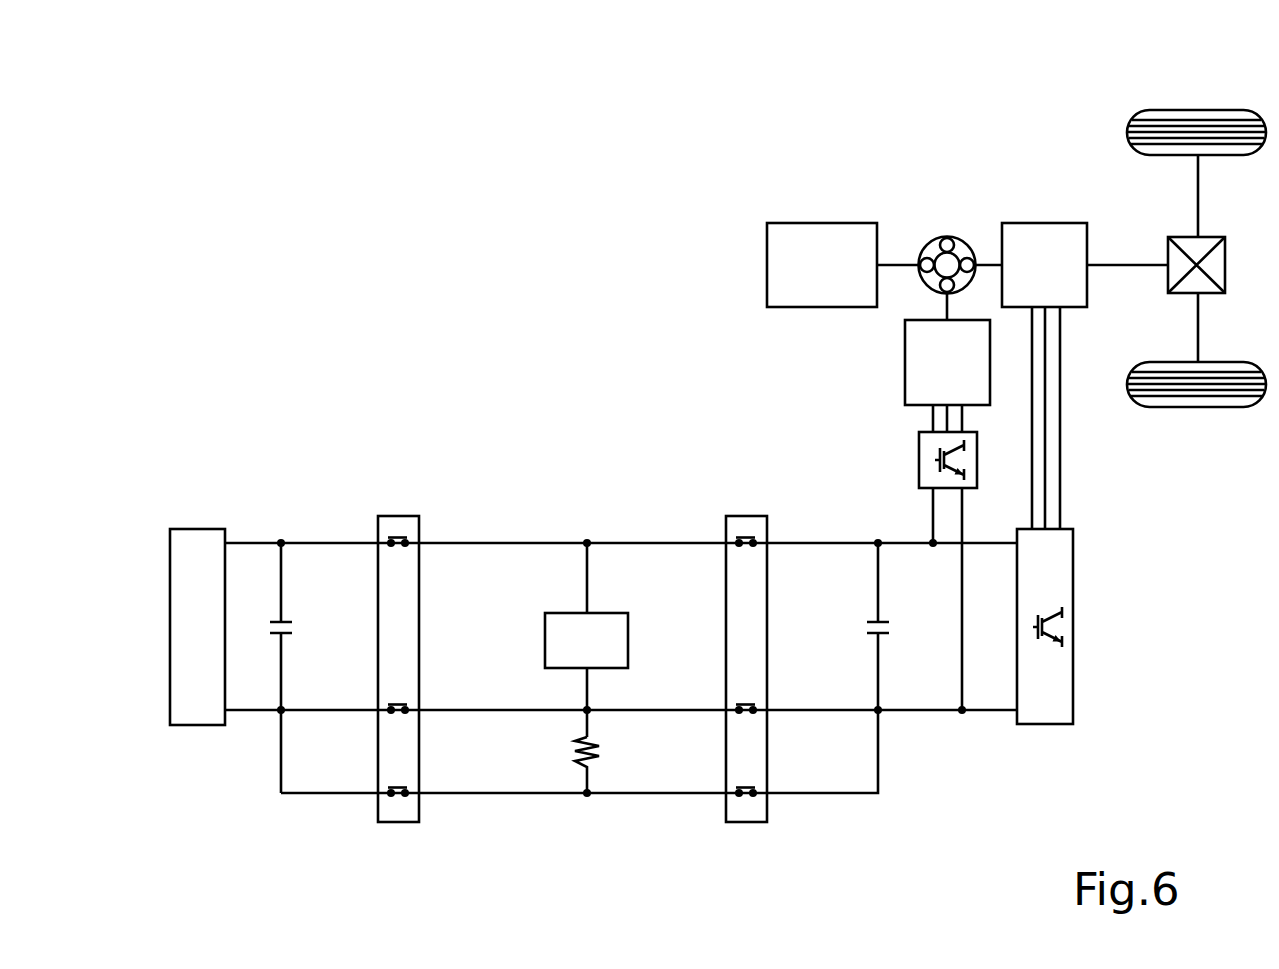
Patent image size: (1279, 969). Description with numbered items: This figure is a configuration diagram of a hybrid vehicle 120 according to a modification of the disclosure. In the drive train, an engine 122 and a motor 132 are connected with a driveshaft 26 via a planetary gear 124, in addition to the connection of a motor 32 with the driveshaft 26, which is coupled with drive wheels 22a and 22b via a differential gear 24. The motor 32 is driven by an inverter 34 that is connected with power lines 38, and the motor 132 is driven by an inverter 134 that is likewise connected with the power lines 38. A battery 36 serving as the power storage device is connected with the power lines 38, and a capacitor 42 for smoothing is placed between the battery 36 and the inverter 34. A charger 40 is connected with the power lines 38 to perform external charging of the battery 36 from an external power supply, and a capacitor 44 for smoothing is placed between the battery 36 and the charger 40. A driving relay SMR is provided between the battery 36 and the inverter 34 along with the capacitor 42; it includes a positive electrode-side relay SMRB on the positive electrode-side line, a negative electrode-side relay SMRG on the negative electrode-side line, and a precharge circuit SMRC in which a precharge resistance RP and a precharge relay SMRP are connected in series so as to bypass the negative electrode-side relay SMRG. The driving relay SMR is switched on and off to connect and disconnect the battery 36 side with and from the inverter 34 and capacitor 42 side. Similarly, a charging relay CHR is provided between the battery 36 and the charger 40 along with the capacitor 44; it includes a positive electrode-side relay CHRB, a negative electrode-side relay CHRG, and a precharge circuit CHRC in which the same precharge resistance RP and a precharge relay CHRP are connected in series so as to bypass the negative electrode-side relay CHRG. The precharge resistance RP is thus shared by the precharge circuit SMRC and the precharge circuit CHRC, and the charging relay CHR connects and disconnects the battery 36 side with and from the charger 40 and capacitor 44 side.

The hybrid vehicle 120 is at (1045, 83).
The engine 122 is at (820, 222).
The planetary gear 124 is at (946, 236).
The motor 132 is at (903, 360).
The inverter 134 is at (918, 452).
The motor 32 is at (1044, 222).
The inverter 34 is at (1044, 725).
The battery 36 is at (612, 612).
The power lines 38 is at (906, 546).
The charger 40 is at (197, 528).
The capacitor 42 is at (873, 620).
The capacitor 44 is at (277, 620).
The driveshaft 26 is at (1142, 263).
The differential gear 24 is at (1208, 236).
The drive wheel 22a is at (1196, 110).
The drive wheel 22b is at (1195, 408).
The charging relay CHR is at (400, 515).
The positive electrode-side relay CHRB is at (407, 538).
The negative electrode-side relay CHRG is at (407, 705).
The precharge relay CHRP is at (407, 788).
The precharge circuit CHRC is at (475, 810).
The driving relay SMR is at (746, 515).
The positive electrode-side relay SMRB is at (755, 538).
The negative electrode-side relay SMRG is at (755, 705).
The precharge relay SMRP is at (755, 788).
The precharge circuit SMRC is at (648, 810).
The precharge resistance RP is at (598, 752).